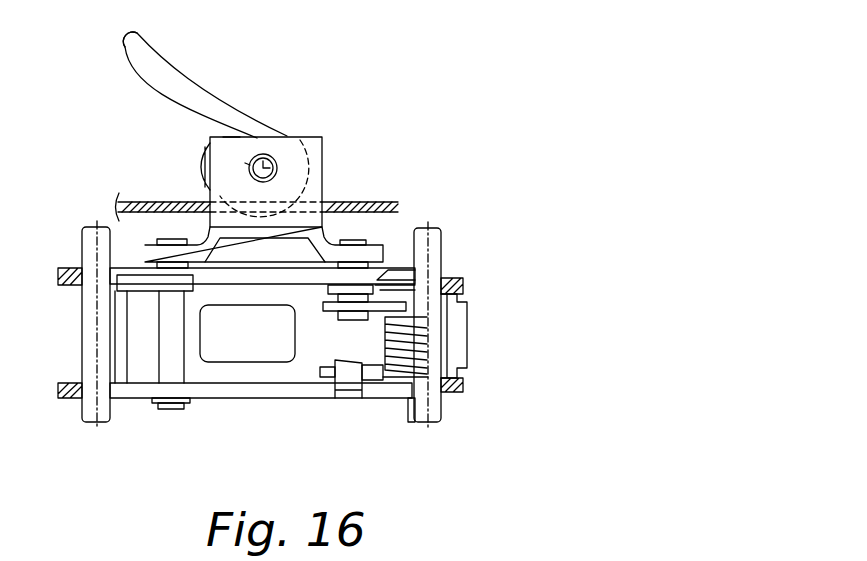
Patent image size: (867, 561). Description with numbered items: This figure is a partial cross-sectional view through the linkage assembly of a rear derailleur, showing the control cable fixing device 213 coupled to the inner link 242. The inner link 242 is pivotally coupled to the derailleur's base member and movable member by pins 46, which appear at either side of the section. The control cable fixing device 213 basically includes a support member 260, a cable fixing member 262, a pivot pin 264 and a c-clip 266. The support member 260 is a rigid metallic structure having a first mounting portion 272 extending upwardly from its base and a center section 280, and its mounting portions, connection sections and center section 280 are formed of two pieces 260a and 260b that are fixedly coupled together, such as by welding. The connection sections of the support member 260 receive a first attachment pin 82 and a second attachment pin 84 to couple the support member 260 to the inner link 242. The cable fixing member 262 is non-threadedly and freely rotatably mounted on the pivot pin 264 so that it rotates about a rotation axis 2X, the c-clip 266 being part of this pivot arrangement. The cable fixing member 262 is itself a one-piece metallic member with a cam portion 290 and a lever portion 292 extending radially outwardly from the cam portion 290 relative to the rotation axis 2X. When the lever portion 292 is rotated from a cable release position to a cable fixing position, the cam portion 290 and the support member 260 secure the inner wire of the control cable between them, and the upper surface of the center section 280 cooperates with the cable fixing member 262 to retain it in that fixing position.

The rotation axis 2X is at (250, 165).
The pins 46 is at (95, 424).
The first attachment pin 82 is at (363, 313).
The second attachment pin 84 is at (158, 335).
The control cable fixing device 213 is at (409, 106).
The inner link 242 is at (219, 400).
The support member 260 is at (342, 228).
The first piece of support member 260a is at (218, 249).
The second piece of support member 260b is at (332, 177).
The cable fixing member 262 is at (261, 99).
The pivot pin 264 is at (263, 156).
The c-clip 266 is at (278, 167).
The first mounting portion 272 is at (223, 137).
The center section 280 is at (277, 229).
The cam portion 290 is at (199, 156).
The lever portion 292 is at (160, 60).